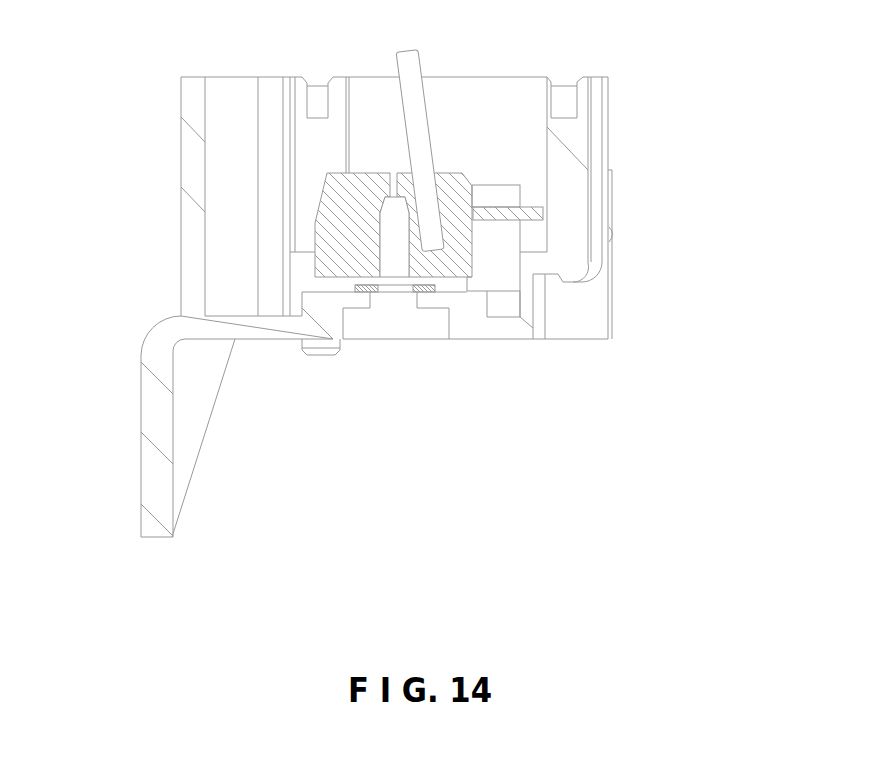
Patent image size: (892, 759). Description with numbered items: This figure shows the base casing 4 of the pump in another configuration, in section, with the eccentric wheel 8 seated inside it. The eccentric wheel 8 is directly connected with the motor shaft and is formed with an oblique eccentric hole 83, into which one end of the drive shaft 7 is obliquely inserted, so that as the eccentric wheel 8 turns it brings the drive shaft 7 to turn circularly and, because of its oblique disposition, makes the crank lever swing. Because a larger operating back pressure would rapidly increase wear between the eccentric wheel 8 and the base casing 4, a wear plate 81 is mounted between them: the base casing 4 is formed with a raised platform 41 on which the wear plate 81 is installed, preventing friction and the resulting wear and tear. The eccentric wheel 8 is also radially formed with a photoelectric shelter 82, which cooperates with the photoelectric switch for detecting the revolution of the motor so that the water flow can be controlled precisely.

The base casing 4 is at (197, 150).
The drive shaft 7 is at (418, 117).
The eccentric wheel 8 is at (393, 145).
The wear plate 81 is at (378, 292).
The photoelectric shelter 82 is at (530, 207).
The eccentric hole 83 is at (435, 180).
The raised platform 41 is at (440, 291).